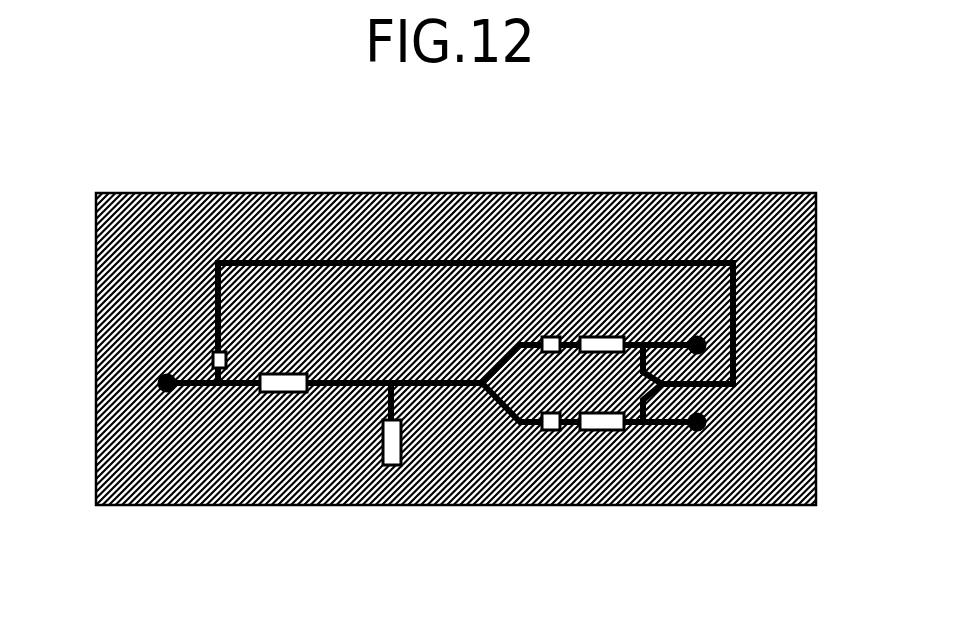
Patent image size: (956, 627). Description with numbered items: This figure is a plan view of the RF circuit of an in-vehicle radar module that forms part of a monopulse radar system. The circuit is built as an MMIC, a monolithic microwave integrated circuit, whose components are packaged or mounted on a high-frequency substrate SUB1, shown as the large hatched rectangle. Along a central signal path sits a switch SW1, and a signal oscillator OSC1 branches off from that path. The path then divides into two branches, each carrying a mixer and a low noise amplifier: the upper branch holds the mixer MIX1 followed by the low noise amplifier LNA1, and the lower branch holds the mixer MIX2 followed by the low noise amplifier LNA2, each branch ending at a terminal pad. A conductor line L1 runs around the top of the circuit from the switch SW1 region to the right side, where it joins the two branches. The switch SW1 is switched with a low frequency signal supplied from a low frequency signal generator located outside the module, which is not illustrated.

The high-frequency substrate SUB1 is at (147, 493).
The transmission line / inductor line L1 is at (293, 262).
The switch SW1 is at (213, 357).
The signal oscillator OSC1 is at (391, 466).
The mixer MIX1 is at (549, 336).
The low noise amplifier LNA1 is at (617, 336).
The mixer MIX2 is at (549, 431).
The low noise amplifier LNA2 is at (617, 431).